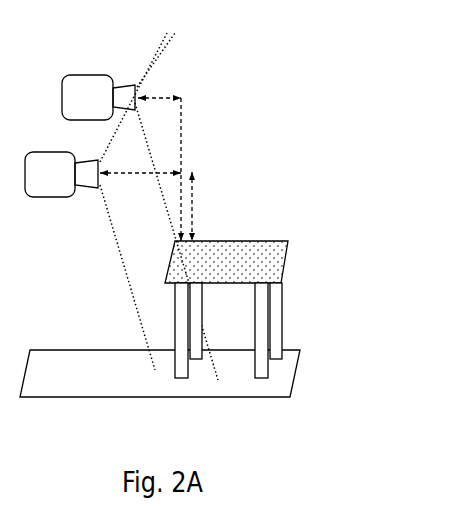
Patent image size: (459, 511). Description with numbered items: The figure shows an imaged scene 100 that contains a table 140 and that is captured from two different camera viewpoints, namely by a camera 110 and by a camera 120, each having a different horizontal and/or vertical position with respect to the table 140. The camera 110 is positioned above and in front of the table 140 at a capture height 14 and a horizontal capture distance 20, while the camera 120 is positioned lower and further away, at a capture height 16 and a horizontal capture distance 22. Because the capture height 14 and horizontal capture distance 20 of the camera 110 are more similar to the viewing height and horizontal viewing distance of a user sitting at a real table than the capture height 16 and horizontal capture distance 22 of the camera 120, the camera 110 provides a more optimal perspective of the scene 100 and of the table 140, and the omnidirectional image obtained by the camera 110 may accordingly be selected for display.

The imaged scene 100 is at (310, 122).
The camera 110 is at (62, 107).
The camera 120 is at (40, 197).
The table 140 is at (262, 240).
The horizontal capture distance 20 is at (160, 97).
The horizontal capture distance 22 is at (128, 175).
The capture height 14 is at (182, 137).
The capture height 16 is at (193, 193).